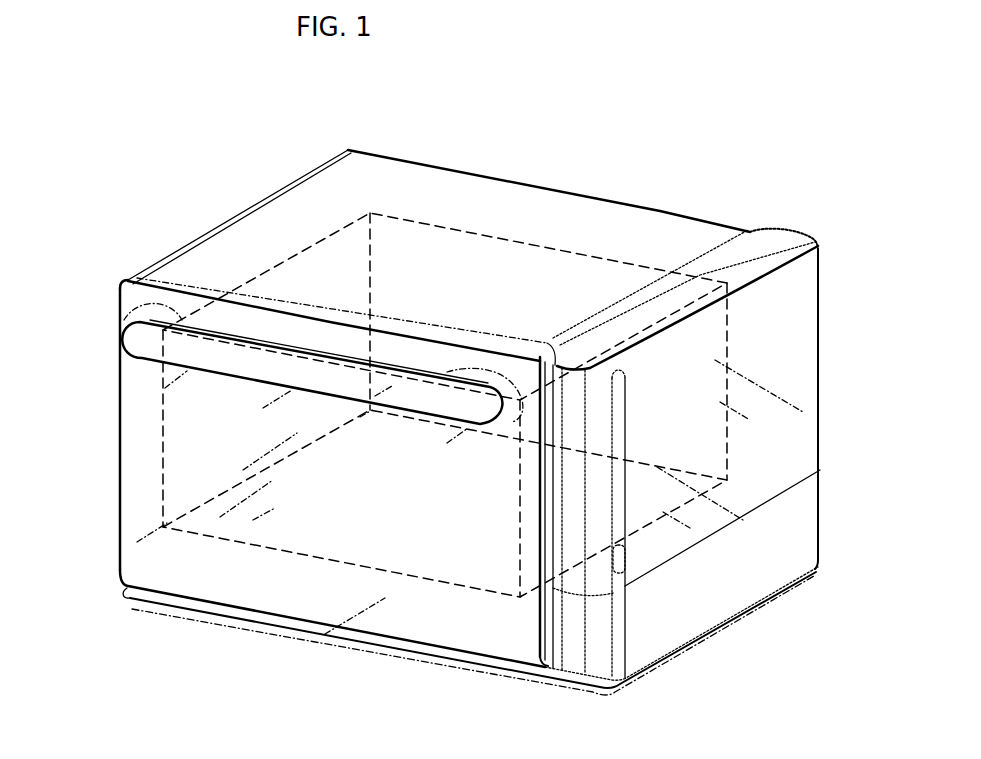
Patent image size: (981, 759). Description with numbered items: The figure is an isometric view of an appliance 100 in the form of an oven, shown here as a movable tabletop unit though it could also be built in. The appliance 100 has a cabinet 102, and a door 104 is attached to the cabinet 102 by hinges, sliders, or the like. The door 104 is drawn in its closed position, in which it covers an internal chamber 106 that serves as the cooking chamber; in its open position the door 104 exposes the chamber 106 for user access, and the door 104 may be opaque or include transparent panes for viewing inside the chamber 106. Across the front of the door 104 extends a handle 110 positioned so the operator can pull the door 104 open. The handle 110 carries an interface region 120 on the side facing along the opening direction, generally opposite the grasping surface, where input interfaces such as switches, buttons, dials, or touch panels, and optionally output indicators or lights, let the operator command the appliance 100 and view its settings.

The appliance 100 is at (606, 105).
The cabinet 102 is at (207, 252).
The door 104 is at (142, 476).
The internal chamber 106 is at (435, 226).
The handle 110 is at (127, 327).
The interface region 120 is at (258, 372).